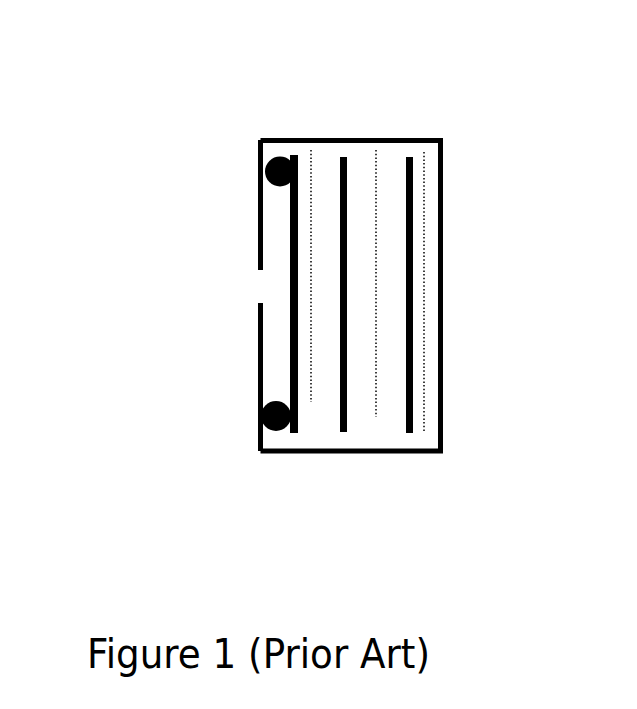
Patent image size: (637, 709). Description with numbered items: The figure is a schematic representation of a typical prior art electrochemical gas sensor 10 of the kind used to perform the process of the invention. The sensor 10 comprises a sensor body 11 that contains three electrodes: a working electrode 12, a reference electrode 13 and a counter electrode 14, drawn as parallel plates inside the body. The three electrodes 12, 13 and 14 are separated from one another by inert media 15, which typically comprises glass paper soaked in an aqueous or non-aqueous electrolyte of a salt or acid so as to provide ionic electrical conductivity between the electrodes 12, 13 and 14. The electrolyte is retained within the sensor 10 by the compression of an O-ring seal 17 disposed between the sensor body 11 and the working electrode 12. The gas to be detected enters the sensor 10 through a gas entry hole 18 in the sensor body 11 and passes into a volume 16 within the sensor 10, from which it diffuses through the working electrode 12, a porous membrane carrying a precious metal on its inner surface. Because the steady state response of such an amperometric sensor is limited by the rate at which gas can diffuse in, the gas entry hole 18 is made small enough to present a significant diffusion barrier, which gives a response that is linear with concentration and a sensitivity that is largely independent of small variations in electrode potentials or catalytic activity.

The electrochemical sensor 10 is at (523, 303).
The sensor body 11 is at (443, 220).
The working electrode 12 is at (298, 155).
The reference electrode 13 is at (347, 157).
The counter electrode 14 is at (413, 170).
The inert media 15 is at (309, 403).
The volume 16 is at (278, 218).
The O-ring seal 17 is at (273, 432).
The gas entry hole 18 is at (260, 287).